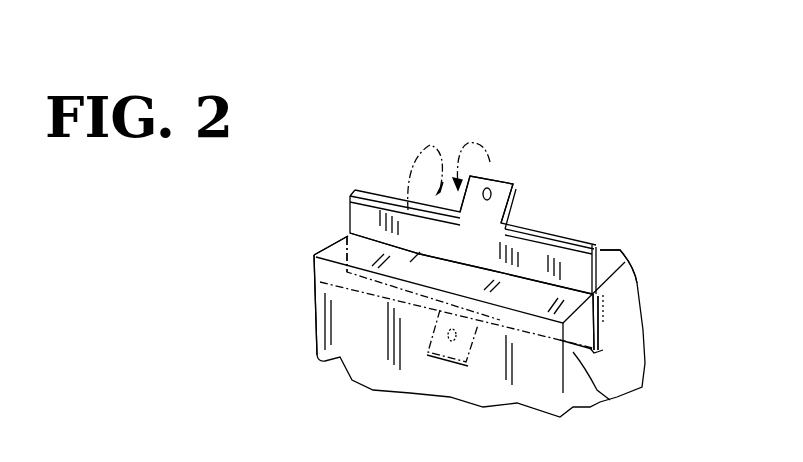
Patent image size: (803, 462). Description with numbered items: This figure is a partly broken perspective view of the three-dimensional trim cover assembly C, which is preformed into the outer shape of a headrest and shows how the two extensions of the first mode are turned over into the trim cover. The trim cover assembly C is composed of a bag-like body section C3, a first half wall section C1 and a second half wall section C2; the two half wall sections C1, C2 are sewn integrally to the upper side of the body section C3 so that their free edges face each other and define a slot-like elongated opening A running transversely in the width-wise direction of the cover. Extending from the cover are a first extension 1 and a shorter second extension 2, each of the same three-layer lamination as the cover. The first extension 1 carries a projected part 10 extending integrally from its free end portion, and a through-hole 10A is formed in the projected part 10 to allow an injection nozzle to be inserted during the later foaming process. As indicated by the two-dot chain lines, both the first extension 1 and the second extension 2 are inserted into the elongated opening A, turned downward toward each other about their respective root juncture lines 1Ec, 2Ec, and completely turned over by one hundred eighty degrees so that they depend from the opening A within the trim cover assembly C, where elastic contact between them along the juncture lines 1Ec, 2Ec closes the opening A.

The first extension 1 is at (574, 238).
The root juncture line of the first extension 1Ec is at (603, 284).
The second extension 2 is at (350, 213).
The root juncture line of the second extension 2Ec is at (427, 247).
The projected part 10 is at (514, 185).
The through-hole 10A is at (492, 191).
The elongated opening A is at (549, 238).
The trim cover assembly C is at (645, 329).
The first half wall section C1 is at (600, 263).
The second half wall section C2 is at (346, 237).
The bag-like body section C3 is at (320, 318).